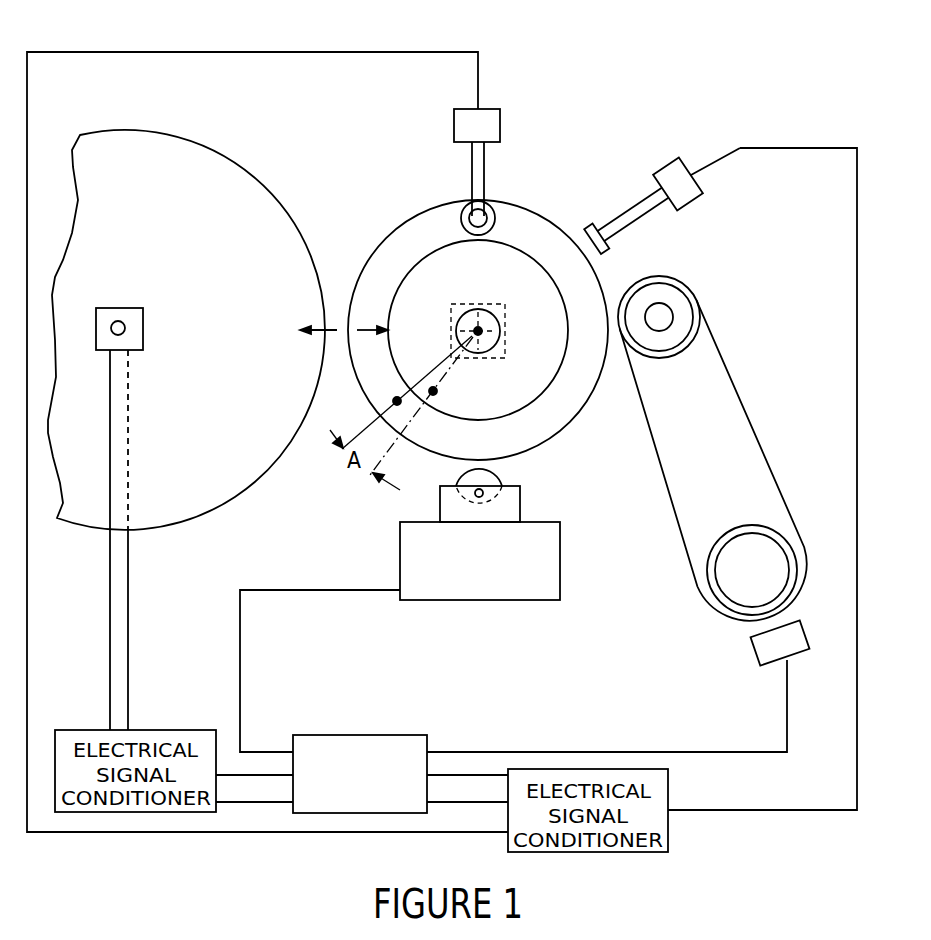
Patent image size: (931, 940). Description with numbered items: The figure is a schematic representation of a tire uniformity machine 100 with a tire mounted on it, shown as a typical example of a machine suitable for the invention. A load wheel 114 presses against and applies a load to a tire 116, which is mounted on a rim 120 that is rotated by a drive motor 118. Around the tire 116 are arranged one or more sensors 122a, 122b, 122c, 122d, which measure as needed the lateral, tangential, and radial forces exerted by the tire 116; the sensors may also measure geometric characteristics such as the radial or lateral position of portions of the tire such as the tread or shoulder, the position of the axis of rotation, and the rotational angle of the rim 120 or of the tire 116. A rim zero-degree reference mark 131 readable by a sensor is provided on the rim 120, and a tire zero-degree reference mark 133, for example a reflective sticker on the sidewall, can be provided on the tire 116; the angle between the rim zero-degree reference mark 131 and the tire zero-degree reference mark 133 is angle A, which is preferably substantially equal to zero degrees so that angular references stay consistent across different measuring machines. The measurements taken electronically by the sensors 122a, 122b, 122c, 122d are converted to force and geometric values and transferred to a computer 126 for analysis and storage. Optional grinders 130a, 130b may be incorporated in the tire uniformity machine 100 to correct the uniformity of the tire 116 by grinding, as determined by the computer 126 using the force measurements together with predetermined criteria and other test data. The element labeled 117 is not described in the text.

The tire uniformity machine 100 is at (607, 77).
The load wheel 114 is at (228, 152).
The tire 116 is at (463, 204).
The carrier ring 117 is at (398, 252).
The drive motor 118 is at (455, 334).
The rim 120 is at (525, 375).
The sensor 122a is at (648, 171).
The sensor 122b is at (501, 131).
The sensor 122c is at (115, 308).
The sensor 122d is at (133, 329).
The computer 126 is at (430, 738).
The grinder 130a is at (725, 352).
The grinder 130b is at (398, 555).
The rim zero-degree reference mark 131 is at (433, 392).
The tire zero-degree reference mark 133 is at (395, 400).